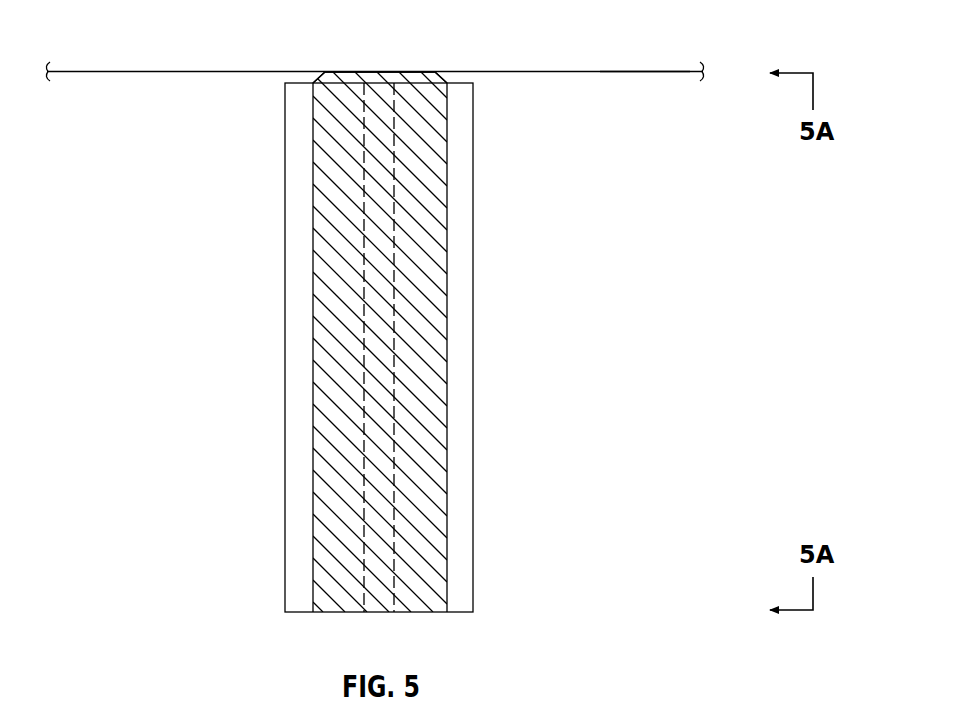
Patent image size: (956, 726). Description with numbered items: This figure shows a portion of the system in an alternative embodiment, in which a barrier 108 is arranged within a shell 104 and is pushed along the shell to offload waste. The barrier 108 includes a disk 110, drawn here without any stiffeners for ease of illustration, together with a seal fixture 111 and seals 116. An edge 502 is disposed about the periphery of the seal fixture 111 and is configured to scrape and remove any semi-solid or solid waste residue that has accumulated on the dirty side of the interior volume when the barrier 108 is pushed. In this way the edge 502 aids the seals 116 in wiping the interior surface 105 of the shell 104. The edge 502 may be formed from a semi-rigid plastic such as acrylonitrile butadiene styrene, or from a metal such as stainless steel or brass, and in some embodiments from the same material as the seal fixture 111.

The shell 104 is at (123, 71).
The interior surface 105 is at (614, 75).
The barrier 108 is at (366, 342).
The disk 110 is at (383, 472).
The seal fixture 111 is at (285, 253).
The seals 116 is at (440, 118).
The edge 502 is at (475, 75).